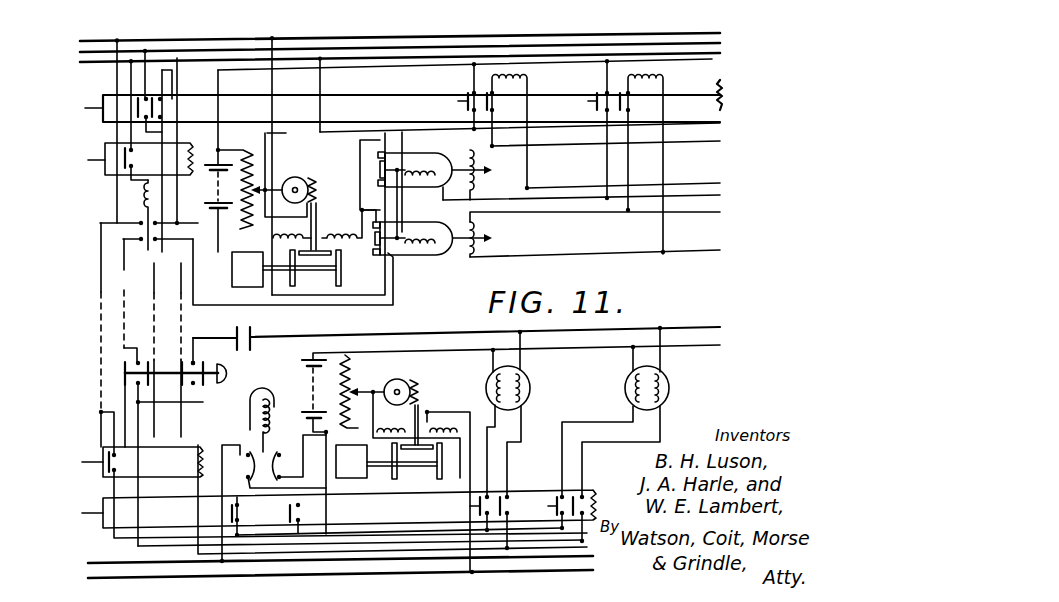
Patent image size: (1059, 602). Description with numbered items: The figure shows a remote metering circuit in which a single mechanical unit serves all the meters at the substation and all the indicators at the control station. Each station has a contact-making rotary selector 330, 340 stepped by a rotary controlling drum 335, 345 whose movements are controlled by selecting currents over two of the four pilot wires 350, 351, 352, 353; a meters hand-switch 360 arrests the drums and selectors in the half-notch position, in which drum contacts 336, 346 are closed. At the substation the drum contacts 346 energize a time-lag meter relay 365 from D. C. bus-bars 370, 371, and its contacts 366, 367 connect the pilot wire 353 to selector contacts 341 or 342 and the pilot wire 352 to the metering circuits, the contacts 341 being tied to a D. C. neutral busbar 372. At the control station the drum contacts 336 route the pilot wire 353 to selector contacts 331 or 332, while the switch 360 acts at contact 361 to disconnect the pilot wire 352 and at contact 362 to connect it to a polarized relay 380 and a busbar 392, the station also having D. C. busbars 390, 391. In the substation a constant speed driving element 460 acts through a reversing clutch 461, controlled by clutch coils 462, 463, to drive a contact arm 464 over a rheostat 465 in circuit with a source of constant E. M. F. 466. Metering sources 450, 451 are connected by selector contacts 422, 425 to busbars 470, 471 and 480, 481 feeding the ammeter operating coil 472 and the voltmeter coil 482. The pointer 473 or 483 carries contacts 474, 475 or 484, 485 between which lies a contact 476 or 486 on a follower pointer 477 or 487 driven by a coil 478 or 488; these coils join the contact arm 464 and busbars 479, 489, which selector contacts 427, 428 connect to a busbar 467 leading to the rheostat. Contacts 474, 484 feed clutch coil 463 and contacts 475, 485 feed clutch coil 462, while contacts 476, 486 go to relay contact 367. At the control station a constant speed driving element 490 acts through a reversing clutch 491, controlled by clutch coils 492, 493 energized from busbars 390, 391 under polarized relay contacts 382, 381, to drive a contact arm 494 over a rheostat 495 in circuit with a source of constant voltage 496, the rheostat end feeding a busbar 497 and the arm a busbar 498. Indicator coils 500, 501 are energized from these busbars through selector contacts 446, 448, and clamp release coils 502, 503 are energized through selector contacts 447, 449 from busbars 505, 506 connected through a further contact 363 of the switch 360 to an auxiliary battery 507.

The control station selector 330 is at (150, 503).
The selector contact 331 is at (231, 513).
The selector contact 332 is at (274, 517).
The control station drum 335 is at (108, 477).
The control station drum contacts 336 is at (104, 460).
The substation selector 340 is at (403, 93).
The selector contact 341 is at (137, 103).
The selector contact 342 is at (157, 101).
The substation drum 345 is at (113, 166).
The substation drum contacts 346 is at (125, 152).
The pilot wire 350 is at (183, 296).
The pilot wire 351 is at (154, 298).
The pilot wire 352 is at (124, 286).
The pilot wire 353 is at (101, 283).
The meters hand-switch 360 is at (243, 386).
The meters switch contact 361 is at (122, 370).
The meters switch contact 362 is at (122, 379).
The meters switch contact 363 is at (224, 365).
The time-lag meter relay 365 is at (143, 205).
The meter relay contact 366 is at (112, 225).
The meter relay contact 367 is at (142, 241).
The D. C. bus-bar 370 is at (660, 34).
The D. C. bus-bar 371 is at (706, 53).
The D. C. neutral busbar 372 is at (680, 44).
The polarized relay 380 is at (268, 402).
The polarized relay contact 381 is at (247, 466).
The polarized relay contact 382 is at (281, 466).
The D. C. busbar 390 is at (125, 562).
The D. C. busbar 391 is at (130, 578).
The busbar 392 is at (547, 547).
The selector contact 422 is at (511, 104).
The selector contact 425 is at (642, 102).
The selector contact 427 is at (466, 96).
The selector contact 428 is at (590, 101).
The selector contact 446 is at (478, 512).
The selector contact 447 is at (506, 496).
The selector contact 448 is at (561, 496).
The selector contact 449 is at (580, 496).
The metering source 450 is at (528, 74).
The metering source 451 is at (661, 73).
The constant speed driving element 460 is at (242, 268).
The reversing clutch 461 is at (320, 272).
The clutch coil 462 is at (273, 234).
The clutch coil 463 is at (343, 228).
The contact arm 464 is at (284, 178).
The rheostat 465 is at (244, 150).
The source of constant E. M. F. 466 is at (219, 198).
The busbar 467 is at (708, 59).
The busbar 470 is at (689, 157).
The busbar 471 is at (708, 190).
The operating coil 472 is at (479, 180).
The pointer 473 is at (455, 151).
The pointer contact 474 is at (378, 154).
The pointer contact 475 is at (378, 184).
The follower pointer contact 476 is at (380, 170).
The follower pointer 477 is at (390, 168).
The follower coil 478 is at (416, 178).
The busbar 479 is at (676, 130).
The busbar 480 is at (712, 212).
The busbar 481 is at (698, 254).
The voltmeter coil 482 is at (480, 241).
The pointer 483 is at (441, 252).
The pointer contact 484 is at (378, 231).
The pointer contact 485 is at (388, 258).
The follower pointer contact 486 is at (380, 254).
The follower pointer 487 is at (393, 241).
The follower coil 488 is at (426, 246).
The busbar 489 is at (700, 200).
The constant speed driving element 490 is at (351, 470).
The reversing clutch 491 is at (418, 462).
The clutch coil 492 is at (402, 422).
The clutch coil 493 is at (448, 422).
The contact arm 494 is at (358, 391).
The rheostat 495 is at (344, 353).
The source of constant voltage 496 is at (306, 378).
The busbar 497 is at (524, 522).
The busbar 498 is at (700, 346).
The indicator operating coil 500 is at (489, 378).
The indicator operating coil 501 is at (635, 394).
The clamp release coil 502 is at (522, 386).
The clamp release coil 503 is at (661, 394).
The busbar 505 is at (713, 318).
The busbar 506 is at (568, 548).
The auxiliary battery 507 is at (243, 331).